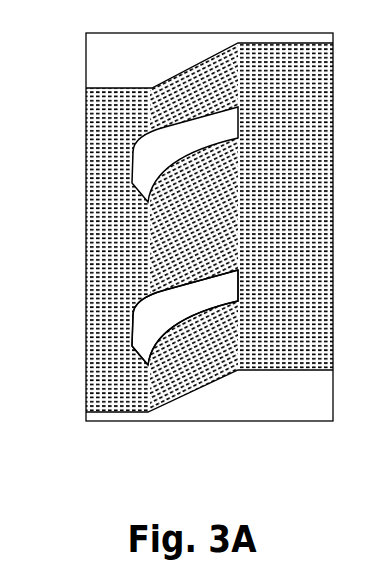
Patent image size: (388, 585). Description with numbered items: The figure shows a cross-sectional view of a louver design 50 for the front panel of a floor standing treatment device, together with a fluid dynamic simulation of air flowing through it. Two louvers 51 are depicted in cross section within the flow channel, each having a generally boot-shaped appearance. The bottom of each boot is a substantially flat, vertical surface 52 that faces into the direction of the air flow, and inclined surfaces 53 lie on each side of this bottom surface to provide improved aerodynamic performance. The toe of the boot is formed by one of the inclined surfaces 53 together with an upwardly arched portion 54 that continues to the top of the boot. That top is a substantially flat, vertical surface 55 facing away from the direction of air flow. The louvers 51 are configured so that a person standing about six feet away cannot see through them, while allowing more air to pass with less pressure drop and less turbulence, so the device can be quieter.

The louver design 50 is at (75, 106).
The louver 51 is at (240, 122).
The flat vertical surface (bottom of boot) 52 is at (131, 333).
The inclined surface 53 is at (130, 313).
The upwardly arched portion 54 is at (158, 274).
The flat vertical surface (top of boot) 55 is at (240, 292).